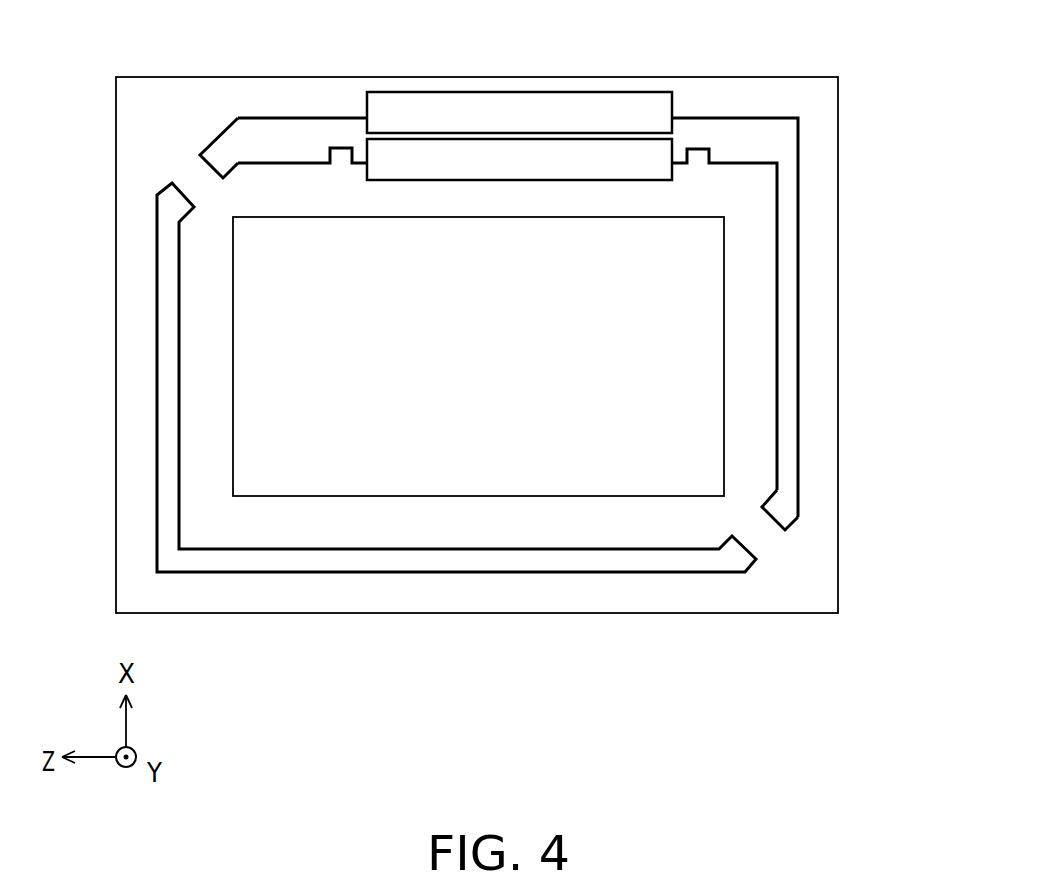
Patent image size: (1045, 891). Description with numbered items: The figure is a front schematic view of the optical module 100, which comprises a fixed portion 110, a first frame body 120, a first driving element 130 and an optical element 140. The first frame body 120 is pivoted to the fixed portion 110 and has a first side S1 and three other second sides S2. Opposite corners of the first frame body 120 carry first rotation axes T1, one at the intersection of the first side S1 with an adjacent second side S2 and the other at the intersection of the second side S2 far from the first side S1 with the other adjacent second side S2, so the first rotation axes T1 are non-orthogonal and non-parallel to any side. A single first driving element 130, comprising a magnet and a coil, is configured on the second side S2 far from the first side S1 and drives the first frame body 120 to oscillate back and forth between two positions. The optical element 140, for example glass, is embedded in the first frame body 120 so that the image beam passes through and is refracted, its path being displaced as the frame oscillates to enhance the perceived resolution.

The optical module 100 is at (491, 333).
The fixed portion 110 is at (820, 130).
The first frame body 120 is at (752, 240).
The first driving element 130 is at (663, 157).
The optical element 140 is at (693, 430).
The first side S1 is at (503, 557).
The second sides S2 is at (486, 67).
The first rotation axes T1 is at (205, 178).